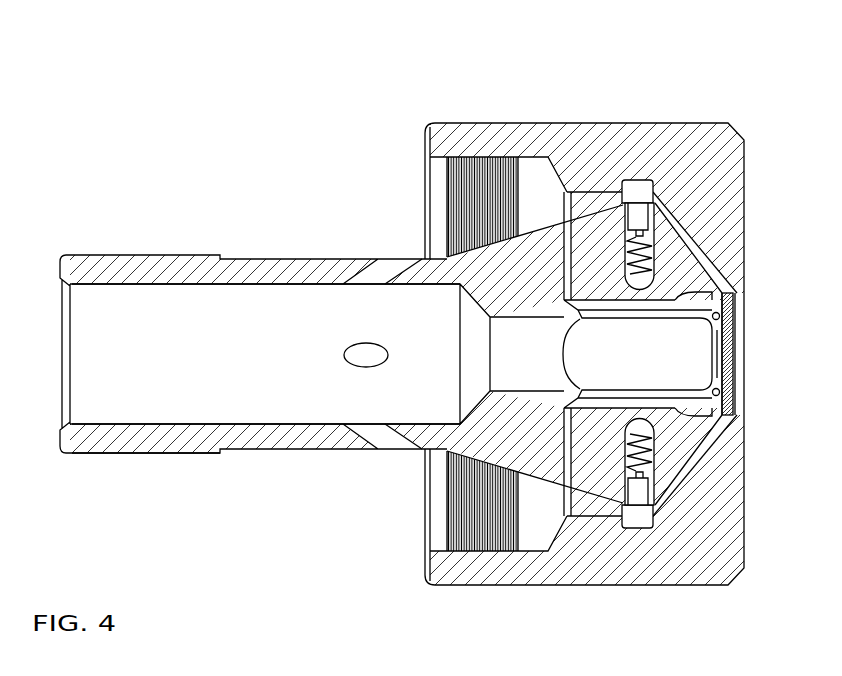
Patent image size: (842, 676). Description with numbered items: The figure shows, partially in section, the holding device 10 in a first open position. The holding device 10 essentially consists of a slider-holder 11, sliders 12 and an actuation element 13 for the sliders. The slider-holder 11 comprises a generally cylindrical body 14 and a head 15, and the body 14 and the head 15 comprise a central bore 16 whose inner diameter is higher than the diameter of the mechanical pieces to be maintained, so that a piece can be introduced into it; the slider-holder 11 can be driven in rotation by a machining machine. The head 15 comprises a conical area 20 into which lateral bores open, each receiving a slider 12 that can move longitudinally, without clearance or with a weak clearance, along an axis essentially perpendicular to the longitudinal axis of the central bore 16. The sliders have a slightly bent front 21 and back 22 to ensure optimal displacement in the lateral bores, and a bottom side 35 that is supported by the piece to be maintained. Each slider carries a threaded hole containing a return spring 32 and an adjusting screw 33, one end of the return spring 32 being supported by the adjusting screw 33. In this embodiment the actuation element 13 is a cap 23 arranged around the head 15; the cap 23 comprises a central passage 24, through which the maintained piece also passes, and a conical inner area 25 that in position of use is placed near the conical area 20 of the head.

The holding device 10 is at (260, 199).
The slider-holder 11 is at (129, 254).
The sliders 12 is at (691, 476).
The actuation element 13 is at (518, 121).
The body 14 is at (133, 450).
The head 15 is at (491, 442).
The central bore 16 is at (183, 363).
The conical area 20 is at (587, 500).
The front 21 is at (736, 264).
The back 22 is at (557, 274).
The cap 23 is at (607, 150).
The central passage 24 is at (747, 353).
The conical inner area 25 is at (728, 441).
The return spring 32 is at (648, 232).
The adjusting screw 33 is at (642, 205).
The bottom side 35 is at (712, 293).